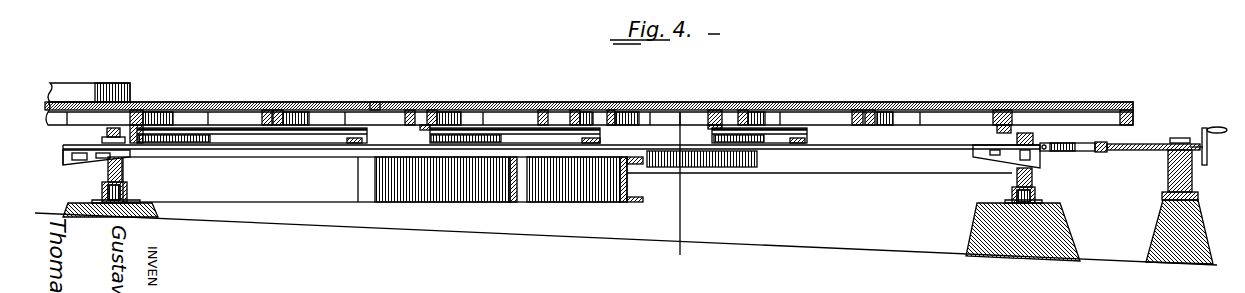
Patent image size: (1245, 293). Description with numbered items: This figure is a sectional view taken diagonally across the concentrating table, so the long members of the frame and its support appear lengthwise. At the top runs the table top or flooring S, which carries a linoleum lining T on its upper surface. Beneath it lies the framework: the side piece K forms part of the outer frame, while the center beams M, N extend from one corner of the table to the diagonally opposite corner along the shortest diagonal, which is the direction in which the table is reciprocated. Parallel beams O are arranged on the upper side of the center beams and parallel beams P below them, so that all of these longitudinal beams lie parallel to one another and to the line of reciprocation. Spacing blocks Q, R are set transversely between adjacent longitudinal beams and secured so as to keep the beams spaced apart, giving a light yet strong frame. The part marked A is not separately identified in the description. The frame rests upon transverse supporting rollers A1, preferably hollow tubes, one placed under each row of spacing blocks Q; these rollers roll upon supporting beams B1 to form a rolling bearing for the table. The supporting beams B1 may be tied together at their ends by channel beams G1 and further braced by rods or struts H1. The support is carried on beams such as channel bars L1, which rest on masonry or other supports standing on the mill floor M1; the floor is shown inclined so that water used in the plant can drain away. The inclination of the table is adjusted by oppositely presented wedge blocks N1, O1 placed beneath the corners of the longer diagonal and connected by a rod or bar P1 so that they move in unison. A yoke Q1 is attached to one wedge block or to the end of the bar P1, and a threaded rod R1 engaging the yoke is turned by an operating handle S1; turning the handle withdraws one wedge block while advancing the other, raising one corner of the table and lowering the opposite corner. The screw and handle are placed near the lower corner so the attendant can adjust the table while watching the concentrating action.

The side piece K is at (1136, 104).
The spacing block Q is at (142, 108).
The parallel beam O is at (272, 110).
The spacing block R is at (282, 110).
The center beam N is at (540, 110).
The center beam M is at (610, 110).
The parallel beam P is at (743, 110).
The block A is at (856, 112).
The linoleum lining T is at (377, 102).
The supporting roller A1 is at (178, 128).
The rod or strut H1 is at (362, 143).
The supporting beam B1 is at (178, 147).
The wedge block O1 is at (90, 155).
The channel bar L1 is at (520, 202).
The connecting rod or bar P1 is at (885, 149).
The channel beam G1 is at (840, 162).
The mill floor M1 is at (613, 245).
The table top S is at (674, 193).
The wedge block N1 is at (1008, 153).
The yoke Q1 is at (1070, 151).
The threaded rod R1 is at (1142, 150).
The operating handle S1 is at (1212, 135).